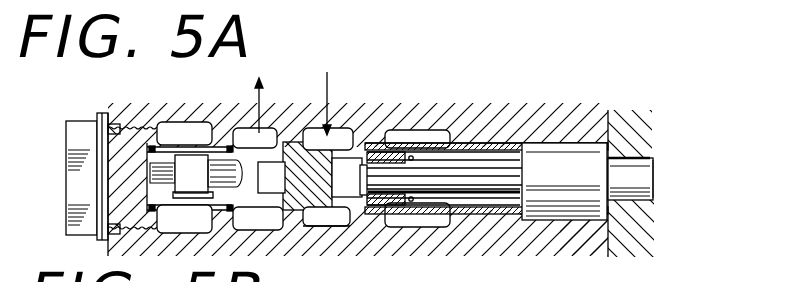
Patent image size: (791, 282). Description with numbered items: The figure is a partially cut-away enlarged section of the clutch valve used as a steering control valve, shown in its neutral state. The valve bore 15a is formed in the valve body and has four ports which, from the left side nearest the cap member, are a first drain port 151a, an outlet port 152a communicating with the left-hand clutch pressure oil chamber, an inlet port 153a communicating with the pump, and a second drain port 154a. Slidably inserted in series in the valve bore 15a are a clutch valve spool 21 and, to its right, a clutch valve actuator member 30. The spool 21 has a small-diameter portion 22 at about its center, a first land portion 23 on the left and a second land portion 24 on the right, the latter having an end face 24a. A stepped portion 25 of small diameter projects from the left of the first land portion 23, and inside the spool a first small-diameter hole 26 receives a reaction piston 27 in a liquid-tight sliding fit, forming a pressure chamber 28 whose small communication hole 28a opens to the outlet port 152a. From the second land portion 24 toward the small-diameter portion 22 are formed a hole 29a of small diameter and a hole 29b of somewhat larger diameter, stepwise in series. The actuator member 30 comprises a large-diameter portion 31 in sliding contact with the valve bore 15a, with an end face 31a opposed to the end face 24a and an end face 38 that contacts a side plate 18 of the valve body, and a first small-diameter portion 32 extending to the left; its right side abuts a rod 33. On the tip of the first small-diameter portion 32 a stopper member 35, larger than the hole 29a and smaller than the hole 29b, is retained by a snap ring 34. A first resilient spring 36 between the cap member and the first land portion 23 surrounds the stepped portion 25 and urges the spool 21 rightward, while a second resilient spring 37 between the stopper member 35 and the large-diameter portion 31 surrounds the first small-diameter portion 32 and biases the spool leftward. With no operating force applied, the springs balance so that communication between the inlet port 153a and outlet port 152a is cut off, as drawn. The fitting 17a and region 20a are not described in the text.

The valve bore 15a is at (588, 222).
The inlet fitting 17a is at (77, 133).
The side plate 18 is at (633, 219).
The valve body 20a is at (504, 124).
The clutch valve spool 21 is at (312, 184).
The small-diameter portion 22 is at (328, 226).
The first land portion 23 is at (287, 223).
The second land portion 24 is at (492, 213).
The end face 24a is at (512, 216).
The stepped portion 25 is at (175, 212).
The first small-diameter hole 26 is at (213, 127).
The reaction piston 27 is at (130, 212).
The pressure chamber 28 is at (268, 194).
The small communication hole 28a is at (273, 135).
The hole of small diameter 29a is at (352, 224).
The hole of larger diameter 29b is at (468, 148).
The clutch valve actuator member 30 is at (576, 142).
The large-diameter portion 31 is at (578, 197).
The end face 31a is at (564, 181).
The first small-diameter portion 32 is at (507, 152).
The rod 33 is at (647, 172).
The snap ring 34 is at (352, 152).
The stopper member 35 is at (400, 226).
The first resilient spring 36 is at (232, 208).
The second resilient spring 37 is at (482, 218).
The end face 38 is at (611, 147).
The first drain port 151a is at (166, 122).
The outlet port 152a is at (265, 128).
The inlet port 153a is at (334, 131).
The second drain port 154a is at (418, 128).